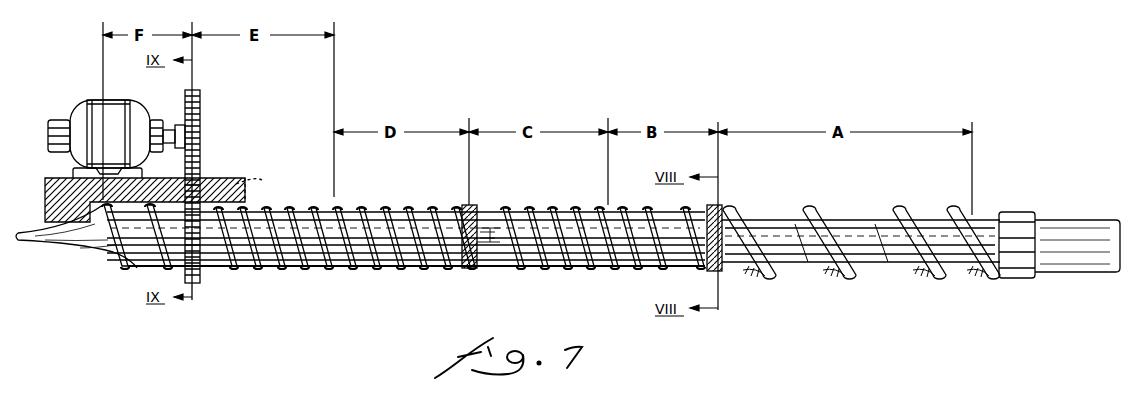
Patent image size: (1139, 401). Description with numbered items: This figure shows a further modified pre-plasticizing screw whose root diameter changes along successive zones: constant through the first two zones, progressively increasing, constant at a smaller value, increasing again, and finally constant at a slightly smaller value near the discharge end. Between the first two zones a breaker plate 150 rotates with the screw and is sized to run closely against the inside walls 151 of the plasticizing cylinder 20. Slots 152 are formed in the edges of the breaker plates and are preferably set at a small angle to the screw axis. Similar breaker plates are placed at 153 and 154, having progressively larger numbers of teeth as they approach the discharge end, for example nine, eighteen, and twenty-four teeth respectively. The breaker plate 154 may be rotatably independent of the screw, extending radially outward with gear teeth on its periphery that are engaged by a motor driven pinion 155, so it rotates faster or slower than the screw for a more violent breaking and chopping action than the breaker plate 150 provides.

The cylindrical tube 20 is at (222, 183).
The breaker plate 150 is at (722, 273).
The inside walls 151 is at (246, 193).
The slots 152 is at (727, 210).
The breaker plate 153 is at (468, 270).
The breaker plate 154 is at (199, 270).
The motor driven pinion 155 is at (197, 118).